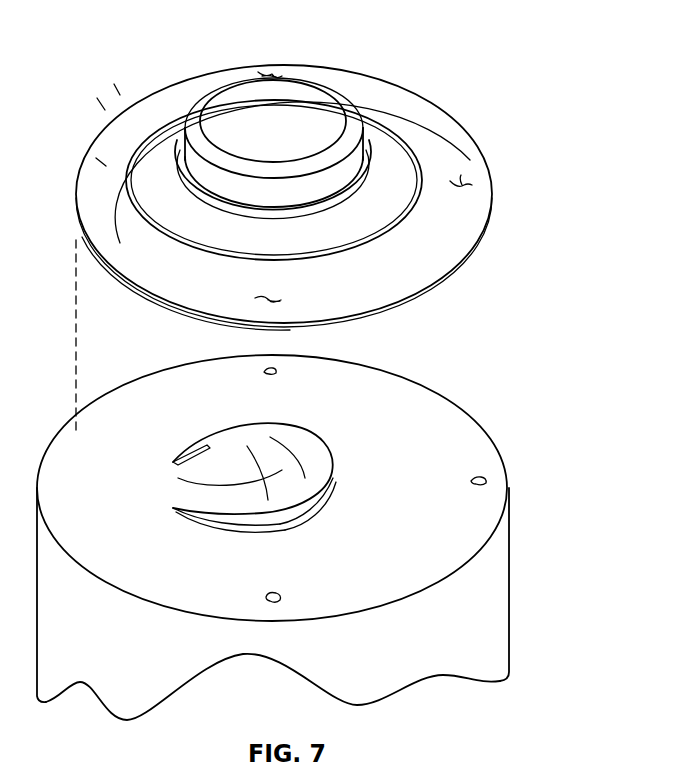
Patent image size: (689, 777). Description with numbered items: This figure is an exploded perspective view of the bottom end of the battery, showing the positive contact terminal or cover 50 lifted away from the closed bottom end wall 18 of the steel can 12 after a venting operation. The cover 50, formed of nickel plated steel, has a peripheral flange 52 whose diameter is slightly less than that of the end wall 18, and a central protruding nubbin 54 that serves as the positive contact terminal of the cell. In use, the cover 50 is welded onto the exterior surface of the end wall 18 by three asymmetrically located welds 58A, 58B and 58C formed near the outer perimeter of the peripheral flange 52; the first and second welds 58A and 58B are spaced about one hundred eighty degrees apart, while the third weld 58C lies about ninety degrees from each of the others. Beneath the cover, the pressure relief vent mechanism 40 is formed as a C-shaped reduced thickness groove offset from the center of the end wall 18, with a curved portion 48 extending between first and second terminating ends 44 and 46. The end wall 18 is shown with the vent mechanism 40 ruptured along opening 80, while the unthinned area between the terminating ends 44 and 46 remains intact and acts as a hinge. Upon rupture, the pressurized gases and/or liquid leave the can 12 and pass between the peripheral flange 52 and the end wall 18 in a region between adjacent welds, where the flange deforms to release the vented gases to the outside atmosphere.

The steel can 12 is at (492, 587).
The closed bottom end wall 18 is at (470, 440).
The pressure relief vent mechanism 40 is at (352, 467).
The first terminating end 44 is at (174, 509).
The second terminating end 46 is at (175, 464).
The curved portion 48 is at (335, 460).
The positive contact terminal or cover 50 is at (197, 72).
The peripheral flange 52 is at (105, 130).
The nubbin 54 is at (306, 102).
The first weld 58A is at (280, 594).
The second weld 58B is at (273, 366).
The third weld 58C is at (484, 477).
The opening 80 is at (333, 505).